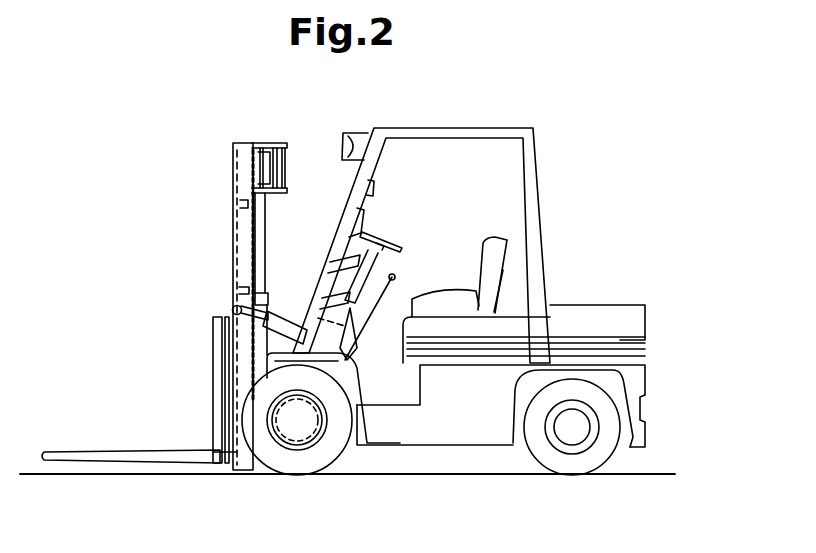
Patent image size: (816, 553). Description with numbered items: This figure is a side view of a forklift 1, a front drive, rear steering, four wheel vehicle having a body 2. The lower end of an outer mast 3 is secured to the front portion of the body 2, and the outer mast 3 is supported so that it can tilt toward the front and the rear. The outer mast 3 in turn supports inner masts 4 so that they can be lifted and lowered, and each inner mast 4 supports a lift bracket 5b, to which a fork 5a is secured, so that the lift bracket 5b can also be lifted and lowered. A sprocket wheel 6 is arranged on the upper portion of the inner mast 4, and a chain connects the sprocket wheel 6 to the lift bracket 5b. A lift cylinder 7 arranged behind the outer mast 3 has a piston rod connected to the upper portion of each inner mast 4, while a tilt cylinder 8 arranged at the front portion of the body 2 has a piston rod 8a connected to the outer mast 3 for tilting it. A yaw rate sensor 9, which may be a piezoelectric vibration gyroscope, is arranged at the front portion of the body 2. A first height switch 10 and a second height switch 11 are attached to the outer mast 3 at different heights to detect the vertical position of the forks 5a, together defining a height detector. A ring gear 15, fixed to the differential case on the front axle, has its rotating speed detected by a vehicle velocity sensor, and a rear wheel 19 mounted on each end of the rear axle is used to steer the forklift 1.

The forklift 1 is at (456, 287).
The body 2 is at (600, 303).
The outer mast 3 is at (234, 163).
The inner mast 4 is at (234, 220).
The fork 5a is at (88, 452).
The lift bracket 5b is at (213, 368).
The sprocket wheel 6 is at (253, 138).
The lift cylinder 7 is at (267, 252).
The tilt cylinder 8 is at (291, 320).
The piston rod 8a is at (233, 307).
The yaw rate sensor 9 is at (345, 326).
The first height switch 10 is at (262, 213).
The second height switch 11 is at (238, 285).
The ring gear 15 is at (297, 443).
The rear wheel 19 is at (615, 470).